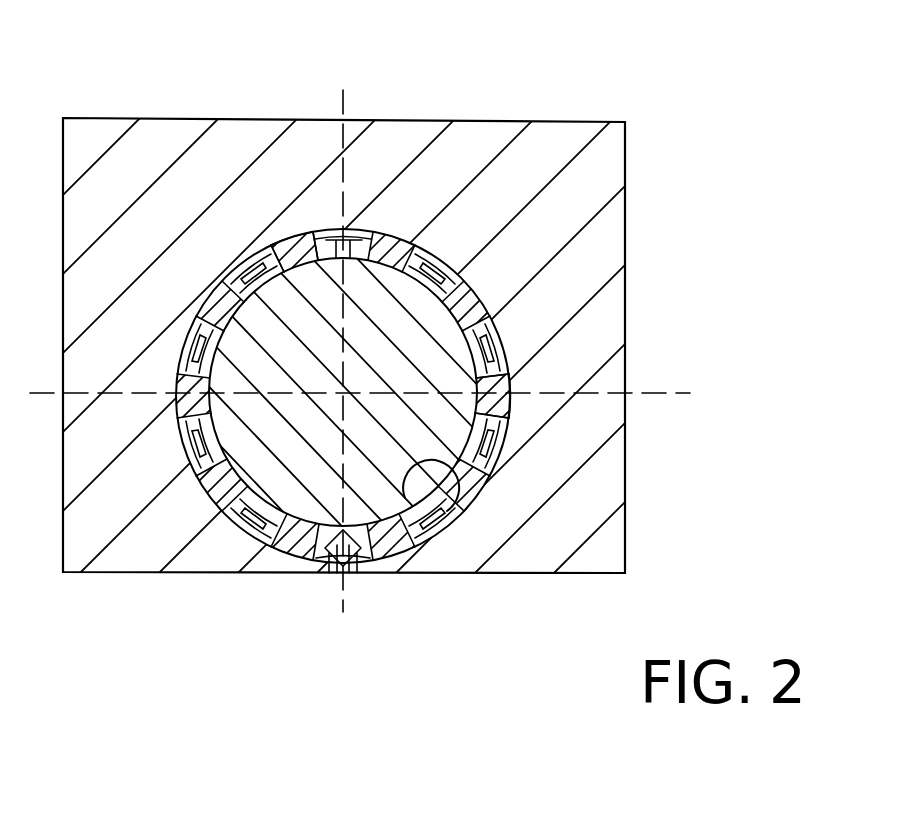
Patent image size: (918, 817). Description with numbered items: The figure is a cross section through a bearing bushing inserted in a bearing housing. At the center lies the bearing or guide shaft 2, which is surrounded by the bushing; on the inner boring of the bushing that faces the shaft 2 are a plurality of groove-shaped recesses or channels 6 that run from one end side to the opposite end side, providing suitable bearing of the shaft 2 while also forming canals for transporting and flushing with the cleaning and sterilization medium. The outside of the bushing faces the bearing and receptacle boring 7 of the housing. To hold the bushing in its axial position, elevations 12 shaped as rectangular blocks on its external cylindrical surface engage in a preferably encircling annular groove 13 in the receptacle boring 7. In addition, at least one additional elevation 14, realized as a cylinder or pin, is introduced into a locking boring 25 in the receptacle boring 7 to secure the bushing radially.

The bearing or guide shaft 2 is at (440, 358).
The groove-shaped recesses or channels 6 is at (405, 498).
The bearing and receptacle boring 7 is at (485, 294).
The elevations 12 is at (307, 230).
The annular groove 13 is at (362, 229).
The additional elevation 14 is at (342, 570).
The locking boring 25 is at (322, 562).